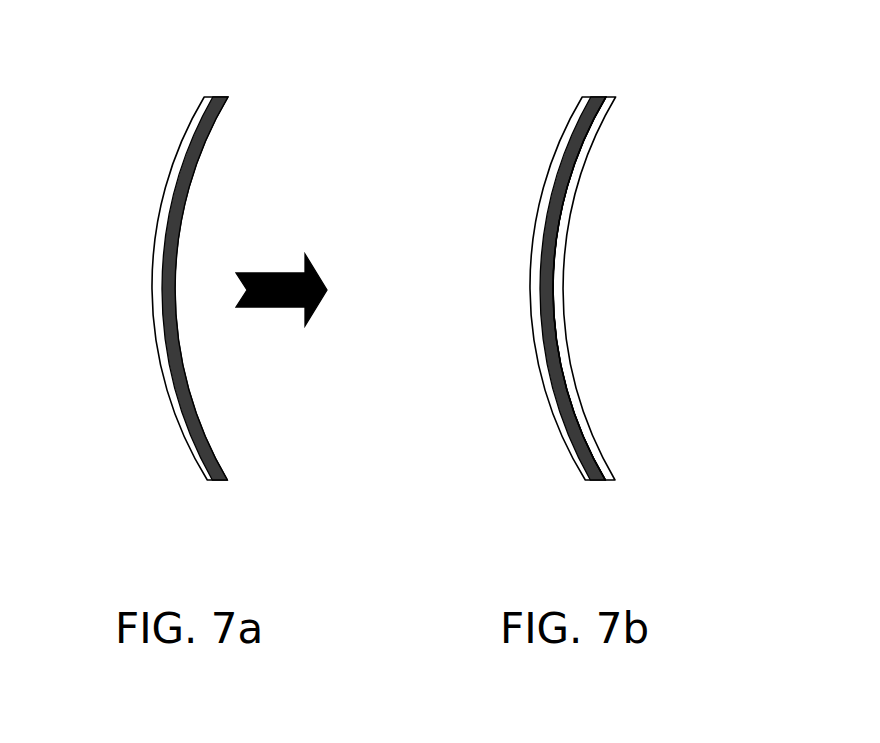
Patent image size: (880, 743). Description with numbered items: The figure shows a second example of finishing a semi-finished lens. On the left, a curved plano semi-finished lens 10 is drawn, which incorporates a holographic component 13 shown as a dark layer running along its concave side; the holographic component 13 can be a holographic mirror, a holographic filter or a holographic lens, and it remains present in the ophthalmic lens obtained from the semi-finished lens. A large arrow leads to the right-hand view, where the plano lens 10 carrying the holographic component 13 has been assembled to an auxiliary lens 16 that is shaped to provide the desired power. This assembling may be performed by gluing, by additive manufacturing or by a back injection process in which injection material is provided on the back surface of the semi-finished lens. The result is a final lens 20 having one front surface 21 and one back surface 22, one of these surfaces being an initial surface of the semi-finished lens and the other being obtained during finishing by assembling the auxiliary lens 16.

In FIG. 7a, the semi-finished lens 10 is at (204, 339).
In FIG. 7a, the holographic component 13 is at (196, 423).
In FIG. 7b, the holographic component 13 is at (572, 437).
In FIG. 7b, the auxiliary lens 16 is at (587, 155).
In FIG. 7b, the final lens 20 is at (597, 304).
In FIG. 7b, the front surface 21 is at (586, 275).
In FIG. 7b, the back surface 22 is at (583, 395).